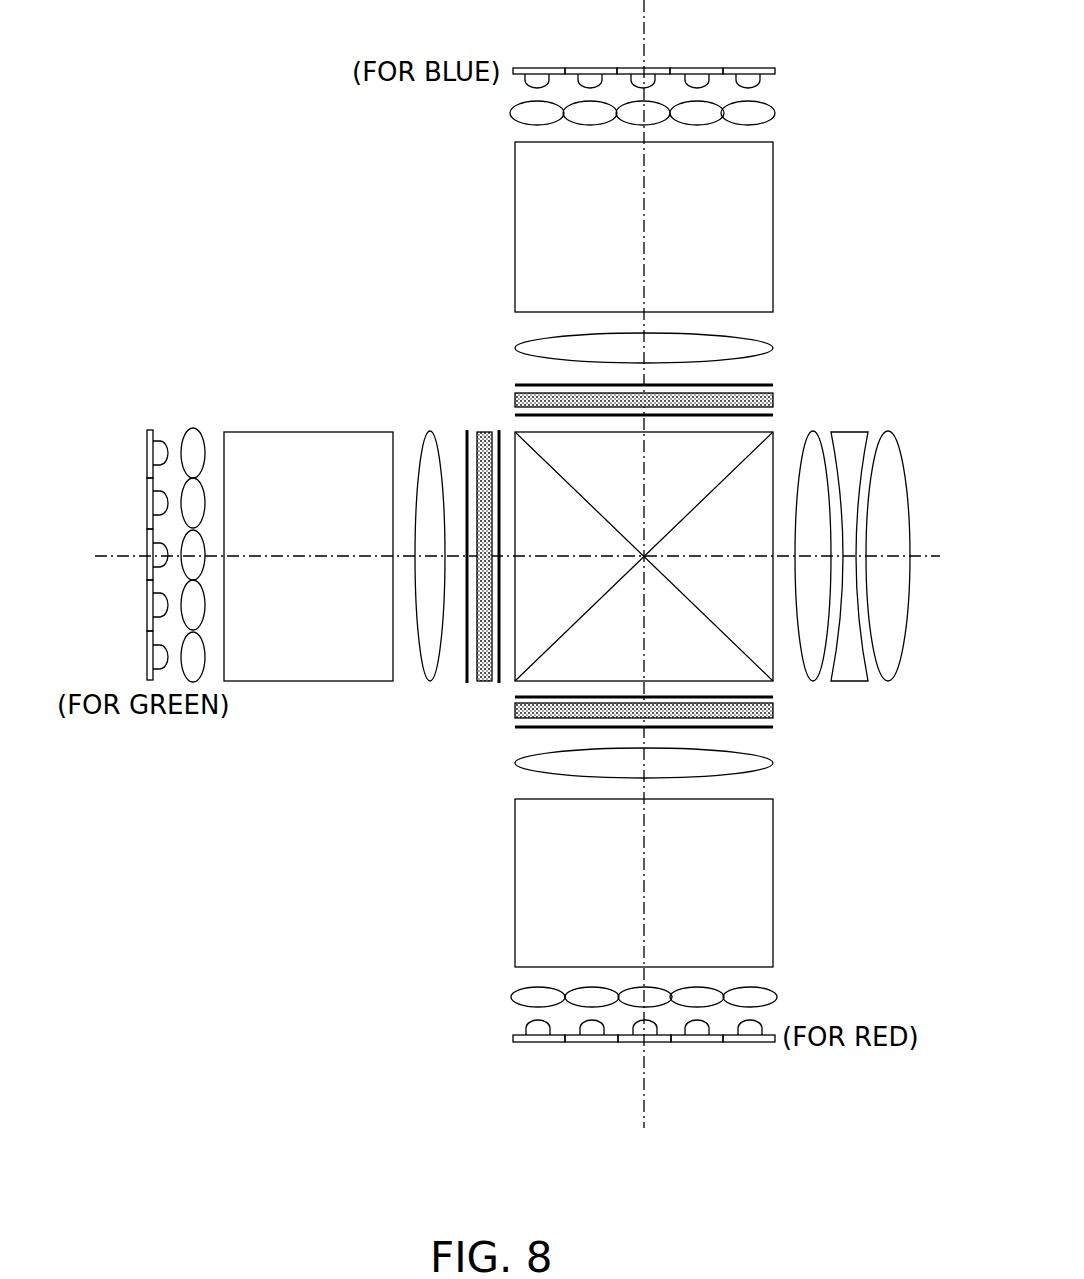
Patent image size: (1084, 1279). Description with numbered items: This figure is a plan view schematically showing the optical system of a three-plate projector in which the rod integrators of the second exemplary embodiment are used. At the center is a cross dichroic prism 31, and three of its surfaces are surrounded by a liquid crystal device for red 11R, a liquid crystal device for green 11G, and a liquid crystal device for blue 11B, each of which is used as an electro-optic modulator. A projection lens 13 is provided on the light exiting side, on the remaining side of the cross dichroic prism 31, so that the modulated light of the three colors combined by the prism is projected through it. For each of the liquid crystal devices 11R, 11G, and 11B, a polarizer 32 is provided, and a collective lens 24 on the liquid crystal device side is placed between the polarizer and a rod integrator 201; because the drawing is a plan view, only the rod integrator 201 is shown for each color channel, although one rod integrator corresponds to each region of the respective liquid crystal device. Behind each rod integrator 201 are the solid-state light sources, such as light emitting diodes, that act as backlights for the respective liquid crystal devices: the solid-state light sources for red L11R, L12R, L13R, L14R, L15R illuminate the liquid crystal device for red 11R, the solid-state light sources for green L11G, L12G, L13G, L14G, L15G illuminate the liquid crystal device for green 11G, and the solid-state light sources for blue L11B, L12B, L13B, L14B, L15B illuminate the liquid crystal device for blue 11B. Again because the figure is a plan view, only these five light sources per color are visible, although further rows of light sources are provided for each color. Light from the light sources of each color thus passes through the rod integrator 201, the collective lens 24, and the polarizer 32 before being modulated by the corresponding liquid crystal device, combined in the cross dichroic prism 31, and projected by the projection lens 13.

The rod integrator 201 is at (527, 238).
The collective lens 24 is at (518, 344).
The liquid crystal device for blue 11B is at (515, 400).
The liquid crystal device for green 11G is at (485, 432).
The liquid crystal device for red 11R is at (773, 712).
The polarizer 32 is at (773, 405).
The cross dichroic prism 31 is at (773, 462).
The projection lens 13 is at (874, 420).
The solid-state light source for blue L11B is at (537, 78).
The solid-state light source for blue L12B is at (590, 78).
The solid-state light source for blue L13B is at (648, 78).
The solid-state light source for blue L14B is at (697, 78).
The solid-state light source for blue L15B is at (748, 78).
The solid-state light source for green L11G is at (156, 659).
The solid-state light source for green L12G is at (156, 607).
The solid-state light source for green L13G is at (156, 556).
The solid-state light source for green L14G is at (156, 505).
The solid-state light source for green L15G is at (156, 455).
The solid-state light source for red L11R is at (750, 1028).
The solid-state light source for red L12R is at (697, 1028).
The solid-state light source for red L13R is at (645, 1028).
The solid-state light source for red L14R is at (590, 1028).
The solid-state light source for red L15R is at (538, 1028).